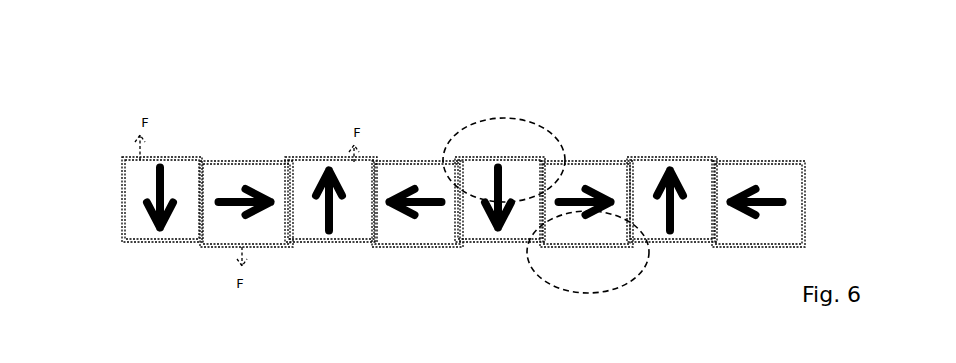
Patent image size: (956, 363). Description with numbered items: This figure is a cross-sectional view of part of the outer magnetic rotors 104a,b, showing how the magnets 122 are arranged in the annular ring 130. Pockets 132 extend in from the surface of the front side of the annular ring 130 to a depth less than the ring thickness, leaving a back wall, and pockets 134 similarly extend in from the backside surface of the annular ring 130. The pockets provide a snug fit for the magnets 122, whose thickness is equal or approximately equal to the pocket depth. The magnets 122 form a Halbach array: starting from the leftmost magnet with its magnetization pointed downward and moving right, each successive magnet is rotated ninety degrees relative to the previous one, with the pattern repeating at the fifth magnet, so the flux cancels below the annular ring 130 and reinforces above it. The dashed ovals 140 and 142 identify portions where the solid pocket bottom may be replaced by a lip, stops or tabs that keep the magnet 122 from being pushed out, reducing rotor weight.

The magnet 122 is at (798, 233).
The pocket 132 is at (248, 142).
The pocket 134 is at (170, 260).
The annular ring 130 is at (417, 247).
The dashed oval 140 is at (546, 128).
The dashed oval 142 is at (563, 290).
The outer magnetic rotors 104a,b is at (101, 258).